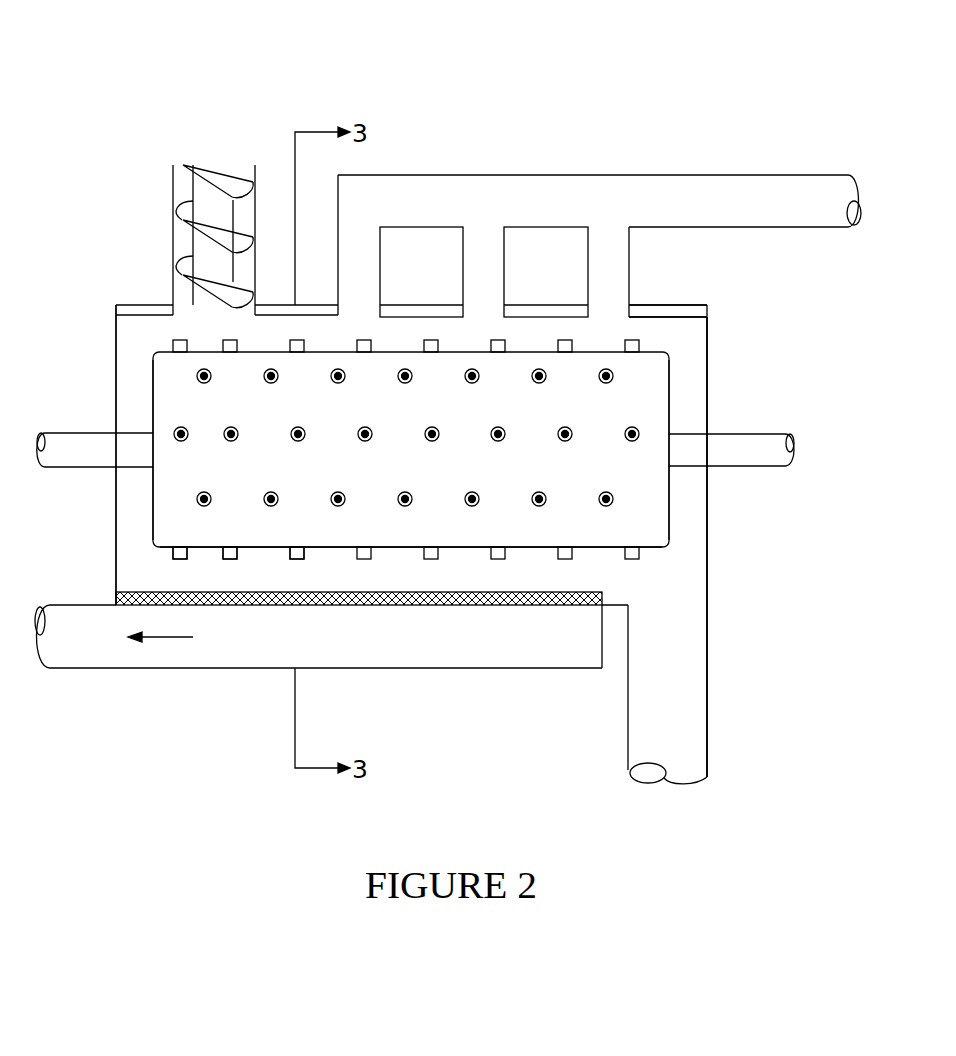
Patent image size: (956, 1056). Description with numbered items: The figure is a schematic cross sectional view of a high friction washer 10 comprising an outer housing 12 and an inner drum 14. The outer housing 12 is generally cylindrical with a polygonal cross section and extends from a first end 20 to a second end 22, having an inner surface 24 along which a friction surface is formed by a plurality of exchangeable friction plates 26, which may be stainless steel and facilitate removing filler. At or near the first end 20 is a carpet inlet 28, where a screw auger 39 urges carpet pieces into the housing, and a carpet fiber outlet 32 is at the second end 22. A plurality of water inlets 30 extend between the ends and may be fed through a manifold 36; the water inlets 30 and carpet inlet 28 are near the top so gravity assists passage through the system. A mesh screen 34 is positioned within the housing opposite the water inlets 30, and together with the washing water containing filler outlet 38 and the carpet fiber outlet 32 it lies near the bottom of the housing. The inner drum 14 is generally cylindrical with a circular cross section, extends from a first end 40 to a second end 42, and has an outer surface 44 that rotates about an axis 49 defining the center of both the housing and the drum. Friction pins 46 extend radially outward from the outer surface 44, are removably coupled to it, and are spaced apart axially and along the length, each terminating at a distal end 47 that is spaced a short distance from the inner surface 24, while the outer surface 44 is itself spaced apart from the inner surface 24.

The high friction washer 10 is at (100, 44).
The outer housing 12 is at (690, 305).
The inner drum 14 is at (670, 369).
The first end 20 is at (116, 333).
The second end 22 is at (706, 408).
The inner surface 24 is at (660, 312).
The friction plates 26 is at (545, 305).
The carpet inlet 28 is at (140, 232).
The water inlets 30 is at (463, 245).
The carpet fiber outlet 32 is at (695, 687).
The mesh screen 34 is at (377, 605).
The manifold 36 is at (599, 186).
The washing water containing filler outlet 38 is at (173, 652).
The screw auger 39 is at (179, 164).
The first end 40 is at (153, 513).
The second end 42 is at (670, 511).
The outer surface 44 is at (597, 548).
The friction pins 46 is at (223, 559).
The distal end 47 is at (297, 559).
The axis 49 is at (760, 457).